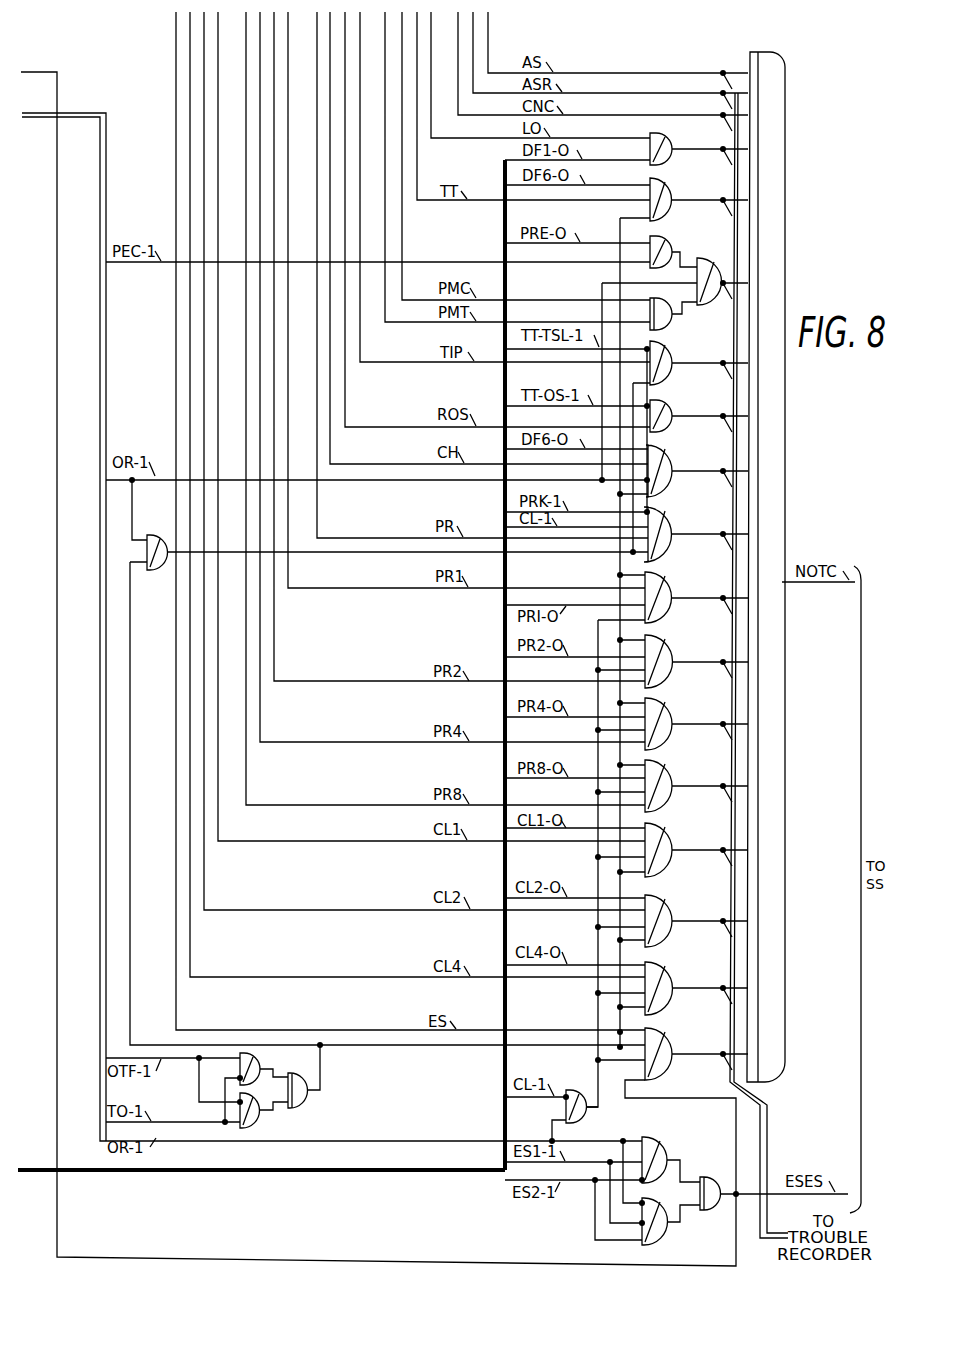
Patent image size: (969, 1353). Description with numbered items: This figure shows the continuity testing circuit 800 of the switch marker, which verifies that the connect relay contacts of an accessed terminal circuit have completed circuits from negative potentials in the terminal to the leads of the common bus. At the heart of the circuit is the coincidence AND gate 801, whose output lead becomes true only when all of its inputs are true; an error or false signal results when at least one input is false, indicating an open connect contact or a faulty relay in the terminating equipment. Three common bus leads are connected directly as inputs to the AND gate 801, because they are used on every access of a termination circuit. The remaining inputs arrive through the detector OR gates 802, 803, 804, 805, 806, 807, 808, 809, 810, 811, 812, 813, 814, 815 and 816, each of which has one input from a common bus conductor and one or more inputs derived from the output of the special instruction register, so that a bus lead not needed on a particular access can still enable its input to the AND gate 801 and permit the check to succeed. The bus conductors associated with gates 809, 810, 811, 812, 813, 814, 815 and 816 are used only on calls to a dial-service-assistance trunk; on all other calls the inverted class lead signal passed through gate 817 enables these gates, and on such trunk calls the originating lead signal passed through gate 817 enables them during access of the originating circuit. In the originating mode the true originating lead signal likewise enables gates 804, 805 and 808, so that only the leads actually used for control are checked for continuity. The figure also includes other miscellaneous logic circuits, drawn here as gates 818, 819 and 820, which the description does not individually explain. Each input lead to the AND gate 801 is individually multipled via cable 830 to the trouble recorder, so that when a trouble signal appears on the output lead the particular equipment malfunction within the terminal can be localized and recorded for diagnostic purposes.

The continuity testing circuit 800 is at (678, 46).
The coincidence AND gate 801 is at (779, 100).
The detector OR gate 802 is at (672, 143).
The detector OR gate 803 is at (672, 186).
The detector OR gate 804 is at (720, 248).
The detector OR gate 805 is at (672, 358).
The detector OR gate 806 is at (672, 405).
The detector OR gate 807 is at (672, 458).
The detector OR gate 808 is at (672, 515).
The detector OR gate 809 is at (673, 580).
The detector OR gate 810 is at (673, 645).
The detector OR gate 811 is at (673, 708).
The detector OR gate 812 is at (673, 770).
The detector OR gate 813 is at (673, 833).
The detector OR gate 814 is at (668, 905).
The detector OR gate 815 is at (668, 972).
The detector OR gate 816 is at (668, 1050).
The gate 817 is at (585, 1114).
The AND gate 818 is at (150, 536).
The AND gate 819 is at (671, 240).
The OR gate 820 is at (672, 320).
The cable 830 is at (766, 1138).